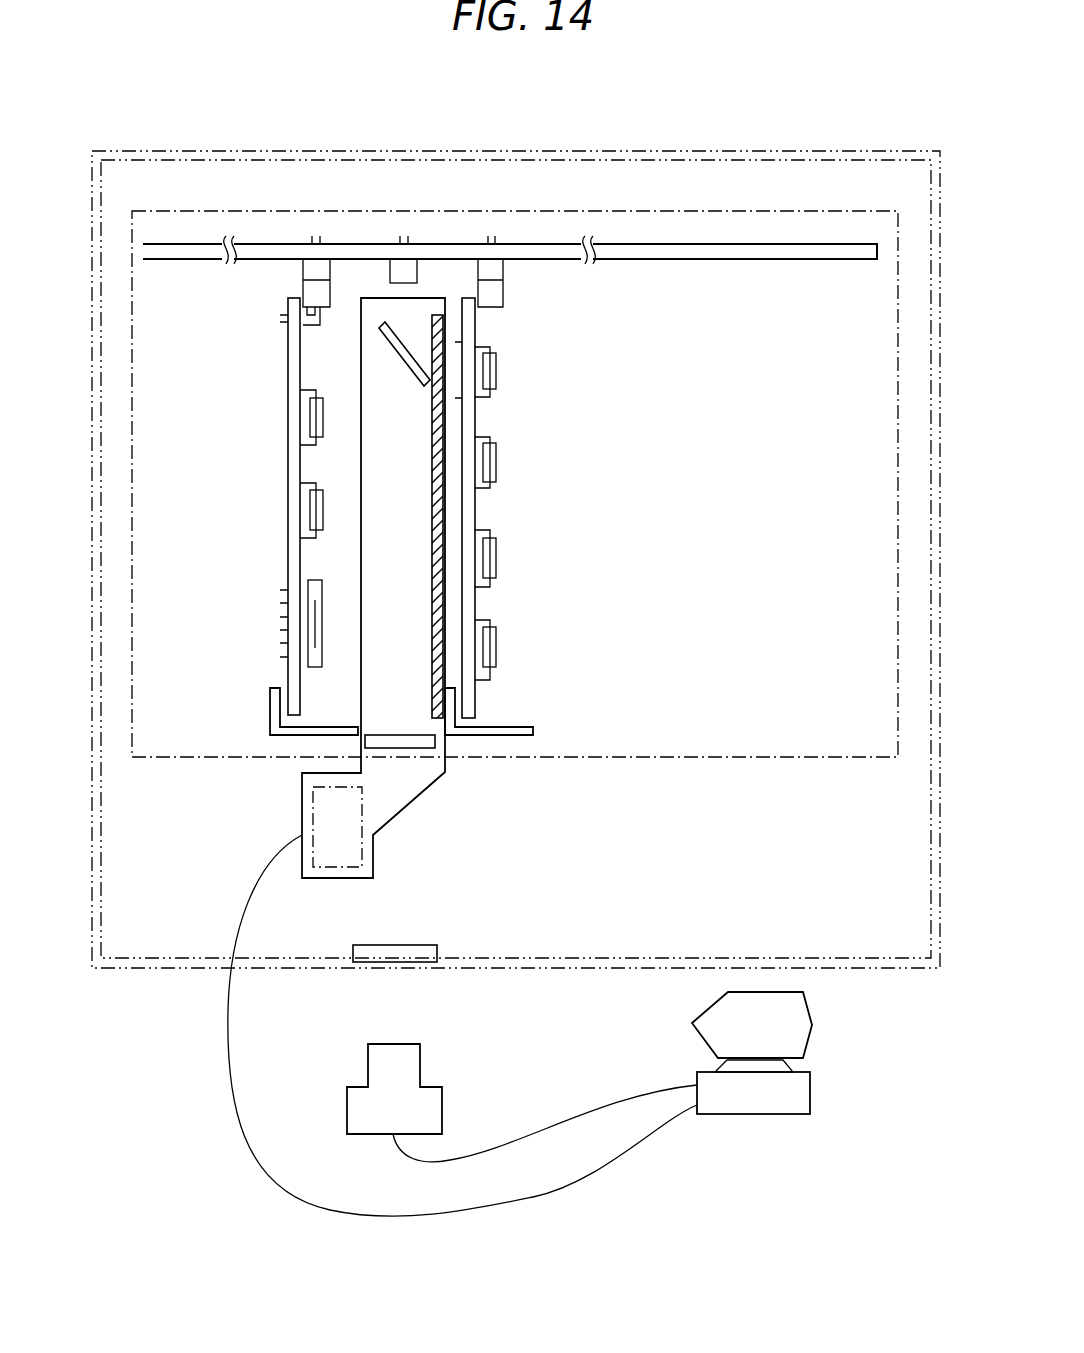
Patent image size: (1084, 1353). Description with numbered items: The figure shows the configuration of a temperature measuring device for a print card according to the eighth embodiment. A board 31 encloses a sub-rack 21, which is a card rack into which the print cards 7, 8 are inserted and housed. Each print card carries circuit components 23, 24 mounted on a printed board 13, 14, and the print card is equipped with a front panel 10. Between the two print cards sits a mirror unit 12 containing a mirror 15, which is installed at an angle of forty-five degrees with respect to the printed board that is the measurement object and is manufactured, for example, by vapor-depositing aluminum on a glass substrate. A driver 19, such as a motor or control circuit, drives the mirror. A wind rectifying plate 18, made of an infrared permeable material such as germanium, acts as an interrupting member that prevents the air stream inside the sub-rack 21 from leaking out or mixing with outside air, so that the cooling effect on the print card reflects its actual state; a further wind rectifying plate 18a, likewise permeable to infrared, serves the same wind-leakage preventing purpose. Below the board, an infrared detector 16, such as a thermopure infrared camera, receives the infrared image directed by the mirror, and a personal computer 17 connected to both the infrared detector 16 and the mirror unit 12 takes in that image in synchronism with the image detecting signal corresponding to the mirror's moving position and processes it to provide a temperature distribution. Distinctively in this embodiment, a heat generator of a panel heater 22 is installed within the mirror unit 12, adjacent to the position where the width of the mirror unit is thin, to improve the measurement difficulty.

The board 31 is at (788, 151).
The sub-rack 21 is at (690, 213).
The print card 7 is at (288, 388).
The print card 8 is at (477, 417).
The circuit components 23 is at (308, 507).
The circuit components 24 is at (497, 462).
The printed board 13 is at (283, 672).
The printed board 14 is at (470, 694).
The front panel 10 is at (277, 740).
The mirror 15 is at (412, 357).
The panel heater 22 is at (447, 325).
The mirror unit 12 is at (325, 880).
The driver 19 is at (352, 851).
The wind rectifying plate 18 is at (410, 742).
The wind rectifying plate 18a is at (427, 945).
The infrared detector 16 is at (422, 1062).
The personal computer 17 is at (740, 1103).